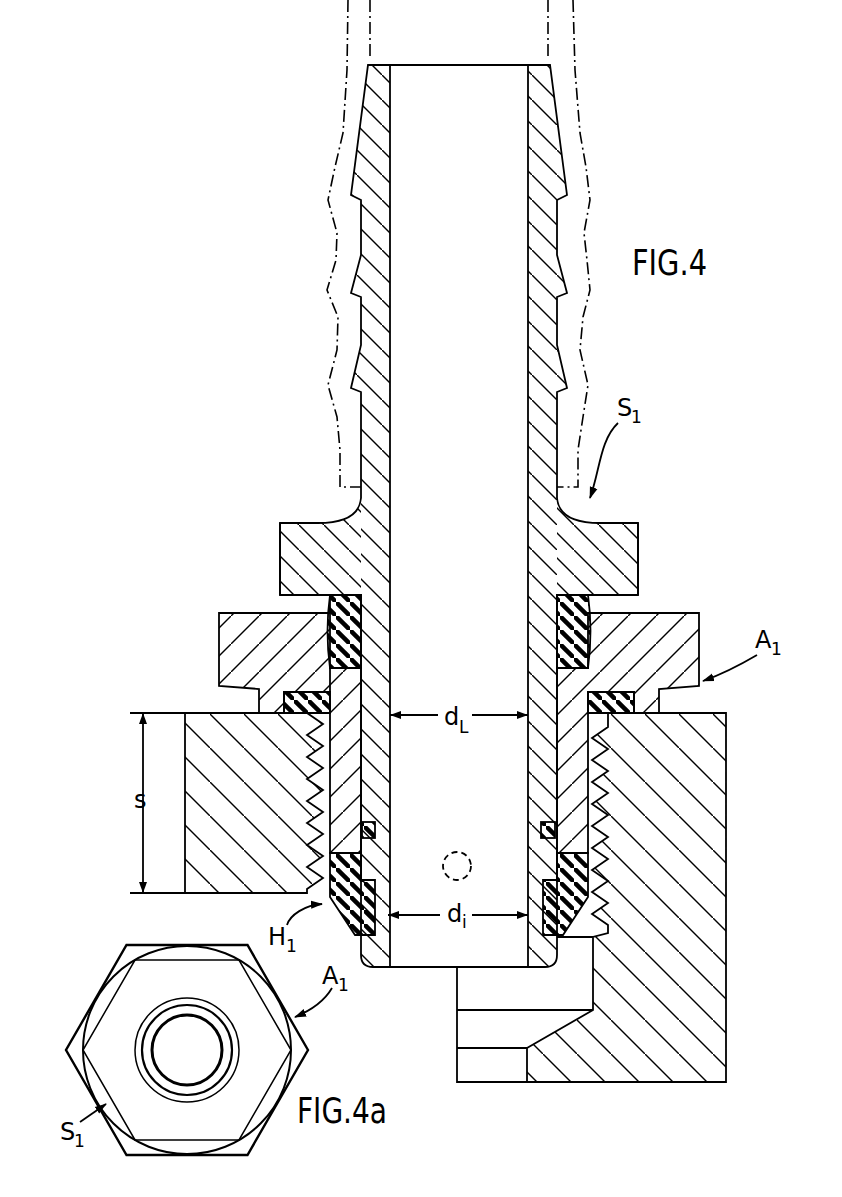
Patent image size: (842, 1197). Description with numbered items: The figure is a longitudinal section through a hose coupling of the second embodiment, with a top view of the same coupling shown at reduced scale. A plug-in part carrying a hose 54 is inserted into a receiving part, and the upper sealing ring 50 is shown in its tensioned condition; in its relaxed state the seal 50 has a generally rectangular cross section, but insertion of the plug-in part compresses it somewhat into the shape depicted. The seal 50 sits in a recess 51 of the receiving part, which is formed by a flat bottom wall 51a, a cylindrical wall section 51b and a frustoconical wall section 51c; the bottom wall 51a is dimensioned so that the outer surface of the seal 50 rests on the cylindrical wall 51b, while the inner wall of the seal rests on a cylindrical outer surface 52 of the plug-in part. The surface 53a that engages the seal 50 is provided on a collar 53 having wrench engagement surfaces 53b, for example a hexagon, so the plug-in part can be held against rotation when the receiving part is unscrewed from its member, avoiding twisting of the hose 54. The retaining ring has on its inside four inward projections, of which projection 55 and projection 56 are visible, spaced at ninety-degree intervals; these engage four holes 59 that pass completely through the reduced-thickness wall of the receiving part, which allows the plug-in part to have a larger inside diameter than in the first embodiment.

In FIG. 4, the sealing ring 50 is at (593, 583).
In FIG. 4, the recess 51 is at (600, 644).
In FIG. 4, the flat bottom wall 51a is at (328, 652).
In FIG. 4, the cylindrical wall section 51b is at (318, 585).
In FIG. 4, the frustoconical wall section 51c is at (320, 607).
In FIG. 4, the cylindrical outer surface 52 is at (582, 597).
In FIG. 4, the collar 53 is at (608, 532).
In FIG. 4a, the collar 53 is at (138, 990).
In FIG. 4, the surface engaging the seal 53a is at (639, 597).
In FIG. 4, the wrench engagement surfaces 53b is at (279, 548).
In FIG. 4a, the wrench engagement surfaces 53b is at (97, 1017).
In FIG. 4, the hose 54 is at (580, 138).
In FIG. 4, the projection 55 is at (455, 853).
In FIG. 4, the projection 56 is at (600, 880).
In FIG. 4, the holes 59 is at (563, 873).